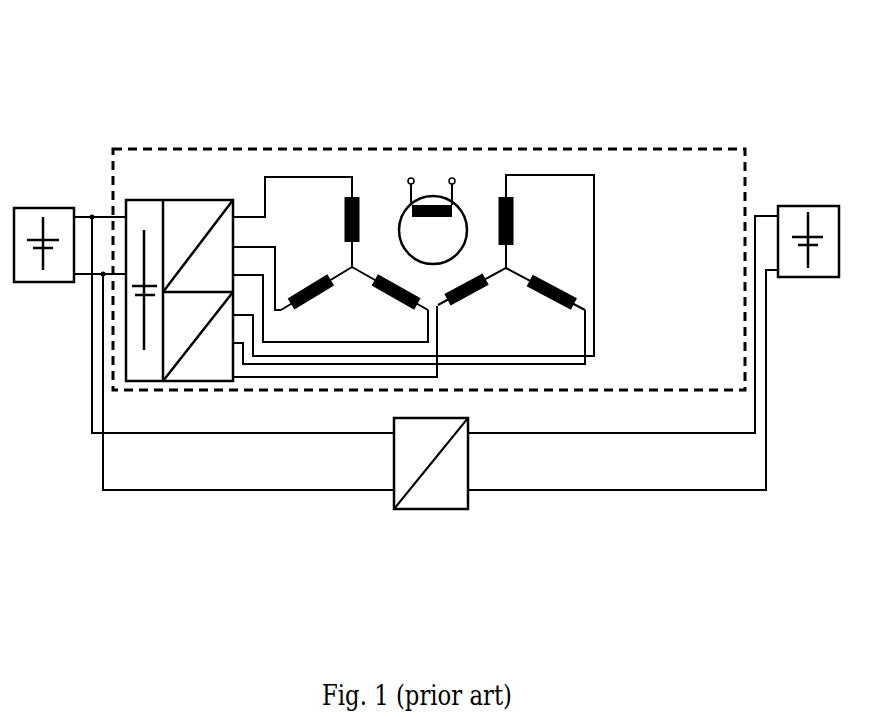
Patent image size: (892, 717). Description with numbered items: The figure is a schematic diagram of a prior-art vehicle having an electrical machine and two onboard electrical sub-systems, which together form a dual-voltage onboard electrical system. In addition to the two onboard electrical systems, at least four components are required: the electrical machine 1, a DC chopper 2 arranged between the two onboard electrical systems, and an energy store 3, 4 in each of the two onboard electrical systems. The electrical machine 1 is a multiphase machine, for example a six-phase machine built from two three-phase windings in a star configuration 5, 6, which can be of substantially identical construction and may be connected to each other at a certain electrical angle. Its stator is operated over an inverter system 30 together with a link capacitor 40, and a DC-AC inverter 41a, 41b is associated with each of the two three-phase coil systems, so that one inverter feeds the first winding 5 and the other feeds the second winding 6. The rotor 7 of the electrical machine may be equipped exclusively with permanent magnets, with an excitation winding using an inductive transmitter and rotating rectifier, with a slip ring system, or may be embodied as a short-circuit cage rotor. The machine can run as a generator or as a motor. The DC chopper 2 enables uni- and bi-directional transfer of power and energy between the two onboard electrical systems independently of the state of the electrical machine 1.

The electrical machine 1 is at (318, 149).
The DC chopper 2 is at (438, 509).
The energy store 3 is at (52, 208).
The energy store 4 is at (783, 206).
The three-phase winding in a star configuration 5 is at (368, 192).
The three-phase winding in a star configuration 6 is at (533, 215).
The rotor 7 is at (428, 197).
The inverter system 30 is at (166, 181).
The link capacitor 40 is at (133, 365).
The DC-AC inverter 41a is at (183, 368).
The DC-AC inverter 41b is at (202, 368).